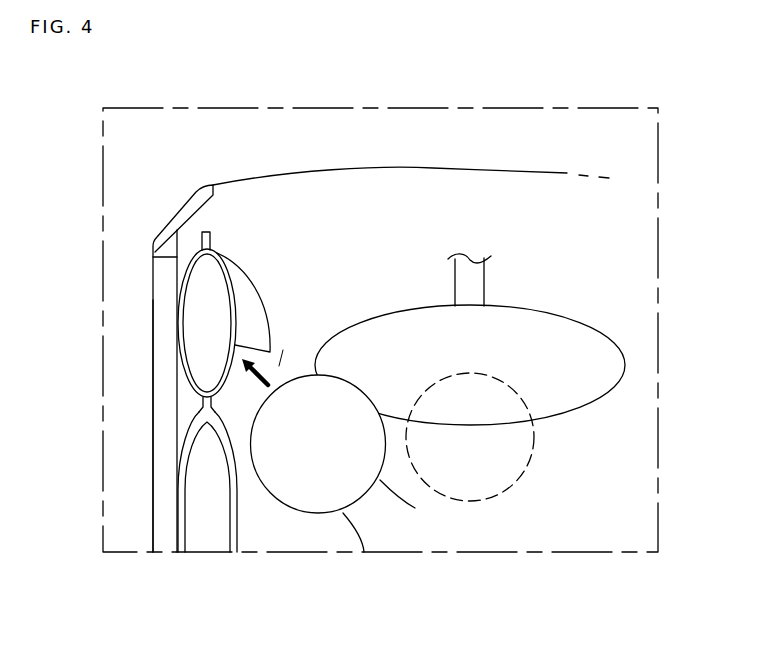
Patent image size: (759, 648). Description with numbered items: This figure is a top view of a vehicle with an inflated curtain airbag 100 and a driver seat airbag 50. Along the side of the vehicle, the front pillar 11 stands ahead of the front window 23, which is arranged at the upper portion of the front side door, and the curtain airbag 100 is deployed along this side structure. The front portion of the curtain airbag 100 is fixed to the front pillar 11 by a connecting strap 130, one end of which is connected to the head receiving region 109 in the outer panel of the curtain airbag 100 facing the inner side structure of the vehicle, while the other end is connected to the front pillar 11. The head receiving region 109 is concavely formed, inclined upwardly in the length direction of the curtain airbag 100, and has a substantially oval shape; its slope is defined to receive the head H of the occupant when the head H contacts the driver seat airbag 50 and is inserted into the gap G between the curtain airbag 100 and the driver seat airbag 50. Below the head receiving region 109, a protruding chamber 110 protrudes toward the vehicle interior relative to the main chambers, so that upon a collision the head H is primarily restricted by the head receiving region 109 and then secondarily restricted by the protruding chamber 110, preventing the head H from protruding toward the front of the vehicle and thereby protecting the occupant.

The front pillar 11 is at (190, 205).
The front window 23 is at (163, 453).
The connecting strap 130 is at (179, 241).
The head receiving region 109 is at (208, 405).
The curtain airbag 100 is at (177, 505).
The protruding chamber 110 is at (245, 305).
The driver seat airbag 50 is at (583, 338).
The gap G is at (283, 352).
The head H is at (303, 480).